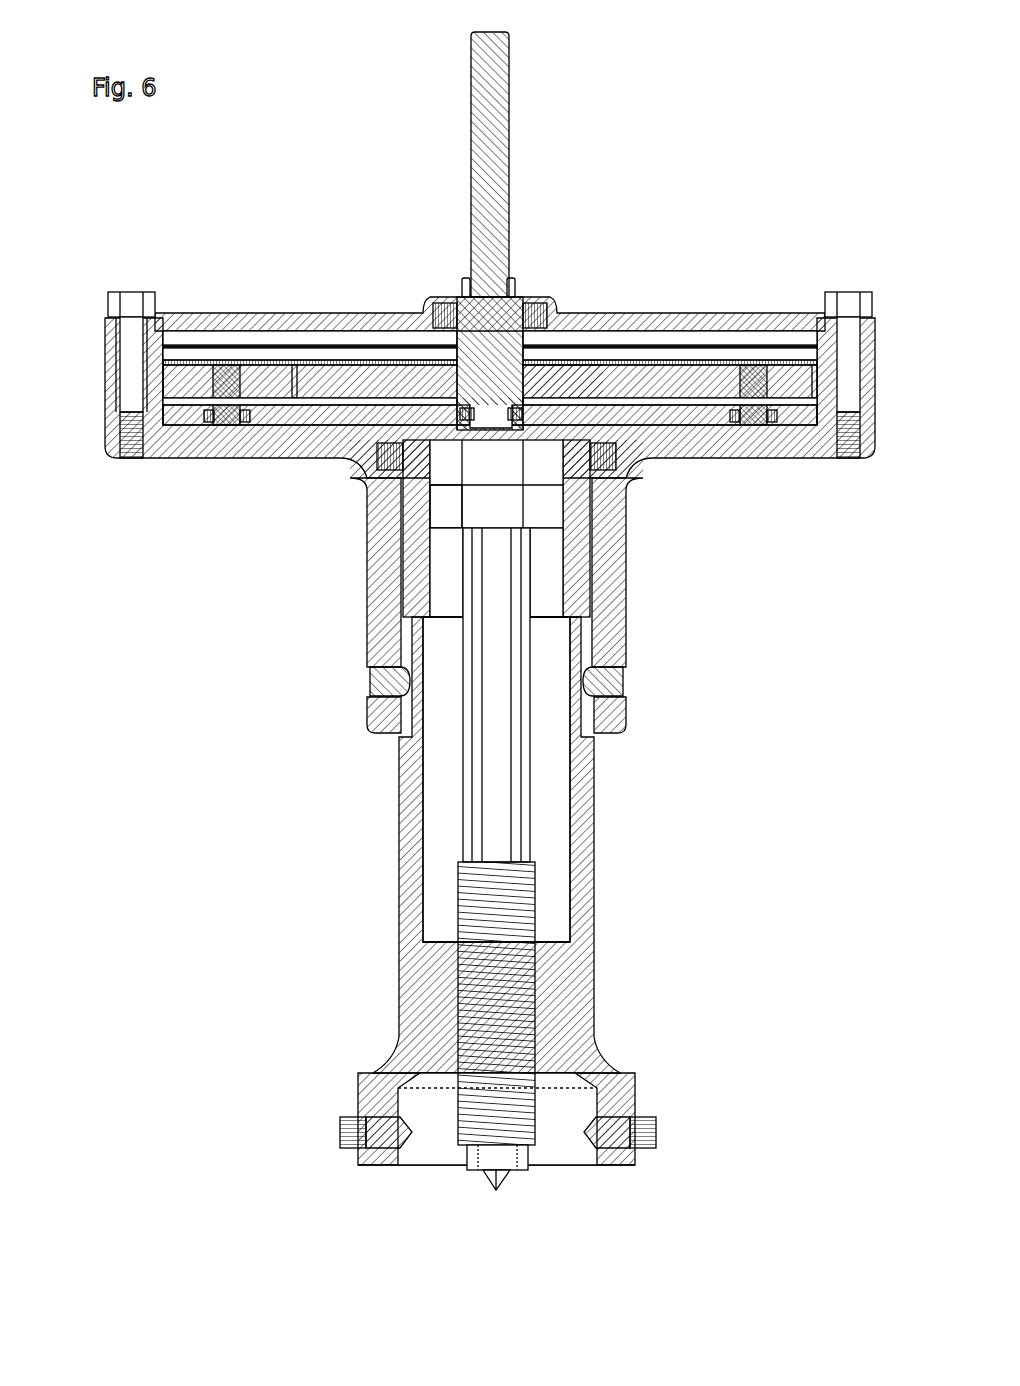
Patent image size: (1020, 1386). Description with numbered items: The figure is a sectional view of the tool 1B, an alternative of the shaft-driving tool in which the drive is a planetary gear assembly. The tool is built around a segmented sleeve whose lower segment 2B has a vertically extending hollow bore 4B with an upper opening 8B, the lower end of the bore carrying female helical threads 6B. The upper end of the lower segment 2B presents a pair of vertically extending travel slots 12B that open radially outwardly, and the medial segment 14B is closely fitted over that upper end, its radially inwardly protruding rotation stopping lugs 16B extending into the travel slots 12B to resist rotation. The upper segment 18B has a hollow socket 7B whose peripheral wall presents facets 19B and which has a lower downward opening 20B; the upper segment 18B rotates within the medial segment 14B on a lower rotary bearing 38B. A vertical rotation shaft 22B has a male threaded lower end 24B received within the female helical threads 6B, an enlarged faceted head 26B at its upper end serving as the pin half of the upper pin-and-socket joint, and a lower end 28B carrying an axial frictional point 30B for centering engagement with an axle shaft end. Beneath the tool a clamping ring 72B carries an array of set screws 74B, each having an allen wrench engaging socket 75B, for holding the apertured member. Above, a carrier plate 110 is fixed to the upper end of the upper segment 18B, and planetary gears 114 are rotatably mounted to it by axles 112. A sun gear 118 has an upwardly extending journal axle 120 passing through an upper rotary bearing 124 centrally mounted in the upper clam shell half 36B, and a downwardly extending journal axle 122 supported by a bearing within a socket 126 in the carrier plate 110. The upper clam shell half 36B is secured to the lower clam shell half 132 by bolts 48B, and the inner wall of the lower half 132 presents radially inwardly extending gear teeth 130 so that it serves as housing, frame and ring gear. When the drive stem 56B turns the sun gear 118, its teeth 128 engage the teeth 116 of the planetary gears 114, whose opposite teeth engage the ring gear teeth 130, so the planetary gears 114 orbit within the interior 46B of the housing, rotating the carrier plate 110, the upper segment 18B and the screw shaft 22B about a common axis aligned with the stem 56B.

The tool 1B is at (717, 240).
The lower segment 2B is at (405, 835).
The hollow bore 4B is at (553, 827).
The female helical threads 6B is at (533, 1003).
The socket 7B is at (548, 565).
The upper opening 8B is at (440, 612).
The travel slots 12B is at (405, 643).
The medial segment 14B is at (385, 550).
The rotation stopping lugs 16B is at (387, 682).
The upper segment 18B is at (583, 543).
The facets 19B is at (543, 470).
The lower downward opening 20B is at (538, 618).
The rotation shaft 22B is at (518, 770).
The male threaded lower end 24B is at (467, 977).
The head 26B is at (440, 507).
The lower end 28B is at (512, 1168).
The frictional point 30B is at (496, 1190).
The upper clam shell half 36B is at (252, 320).
The lower rotary bearing 38B is at (377, 452).
The interior 46B is at (342, 338).
The bolt 48B is at (852, 382).
The rotary drive stem 56B is at (500, 148).
The base block 72B is at (440, 1147).
The set screws 74B is at (638, 1120).
The allen wrench engaging socket 75B is at (350, 1130).
The carrier plate 110 is at (300, 417).
The axles 112 is at (225, 420).
The planetary gears 114 is at (188, 375).
The teeth 116 is at (292, 380).
The sun gear 118 is at (562, 383).
The journal axle 120 is at (492, 317).
The journal axle 122 is at (488, 412).
The upper rotary bearing 124 is at (540, 310).
The socket 126 is at (512, 443).
The teeth 128 is at (302, 377).
The gear teeth 130 is at (128, 365).
The lower clam shell housing half 132 is at (148, 398).